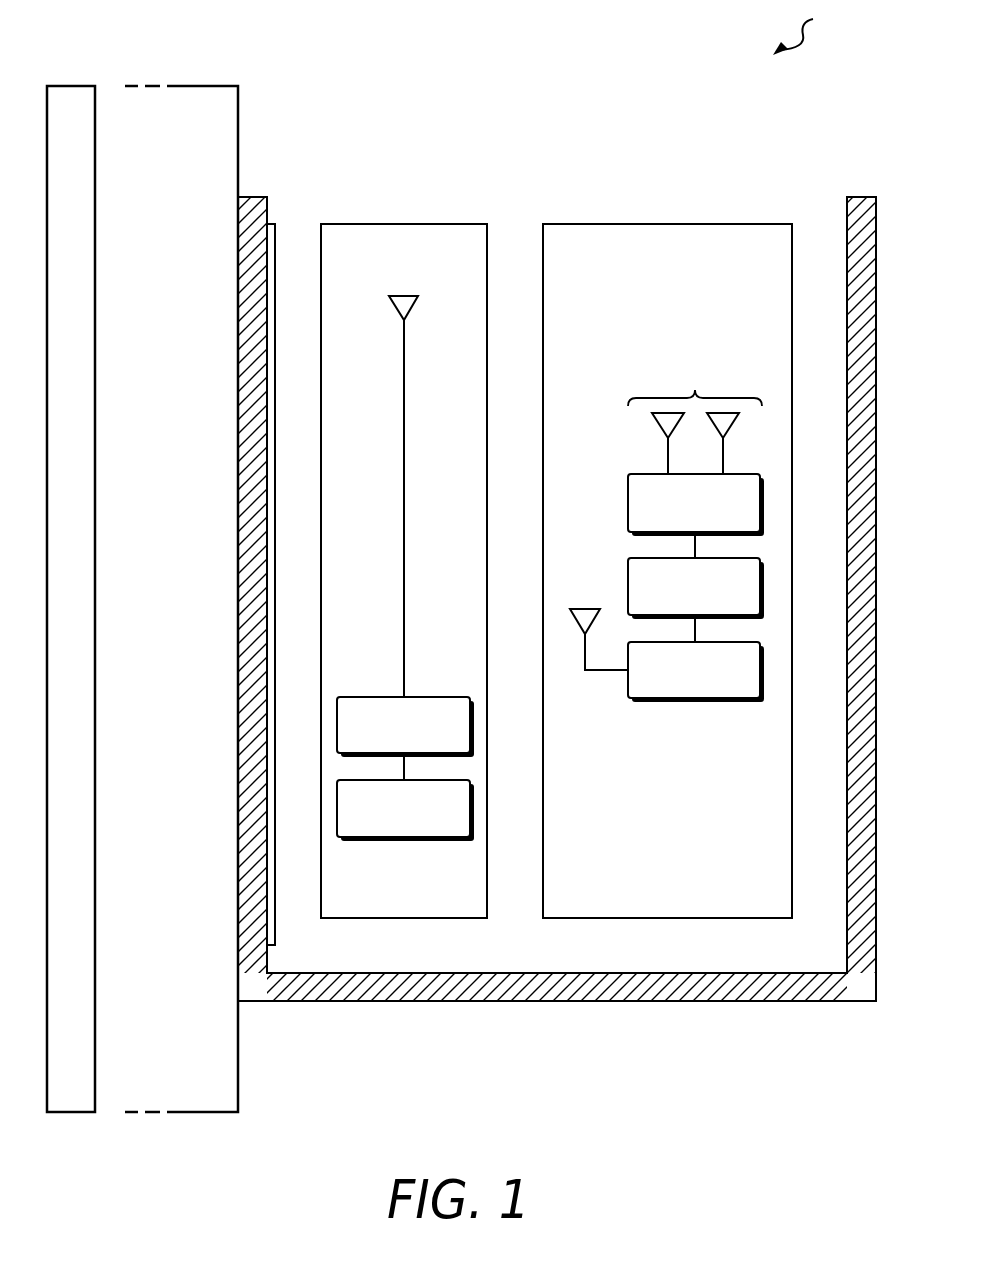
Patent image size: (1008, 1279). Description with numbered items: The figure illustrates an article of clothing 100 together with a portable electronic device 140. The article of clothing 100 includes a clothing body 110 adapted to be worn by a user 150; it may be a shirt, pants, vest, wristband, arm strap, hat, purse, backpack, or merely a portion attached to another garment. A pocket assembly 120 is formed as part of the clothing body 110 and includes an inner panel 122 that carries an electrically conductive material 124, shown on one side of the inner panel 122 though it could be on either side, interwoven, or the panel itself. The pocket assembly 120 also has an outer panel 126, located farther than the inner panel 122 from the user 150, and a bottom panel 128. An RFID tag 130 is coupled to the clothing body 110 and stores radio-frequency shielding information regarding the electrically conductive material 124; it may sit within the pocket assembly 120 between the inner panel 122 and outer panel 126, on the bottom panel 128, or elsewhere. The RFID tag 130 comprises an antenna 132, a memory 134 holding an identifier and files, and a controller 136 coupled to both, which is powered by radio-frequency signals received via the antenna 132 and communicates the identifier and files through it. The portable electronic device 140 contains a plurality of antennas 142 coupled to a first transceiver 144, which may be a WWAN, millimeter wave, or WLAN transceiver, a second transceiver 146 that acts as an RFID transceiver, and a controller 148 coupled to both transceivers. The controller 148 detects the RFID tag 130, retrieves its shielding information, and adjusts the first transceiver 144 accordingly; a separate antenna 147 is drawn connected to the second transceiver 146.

The article of clothing 100 is at (810, 28).
The clothing body 110 is at (206, 86).
The pocket assembly 120 is at (557, 606).
The inner panel 122 is at (253, 197).
The electrically conductive material 124 is at (273, 240).
The outer panel 126 is at (858, 197).
The bottom panel 128 is at (700, 990).
The RFID tag 130 is at (403, 223).
The antenna 132 is at (403, 529).
The memory 134 is at (412, 837).
The controller 136 is at (412, 697).
The portable electronic device 140 is at (667, 223).
The plurality of antennas 142 is at (695, 416).
The first transceiver 144 is at (648, 474).
The second transceiver 146 is at (720, 700).
The antenna 147 is at (597, 672).
The controller 148 is at (627, 580).
The user 150 is at (72, 86).